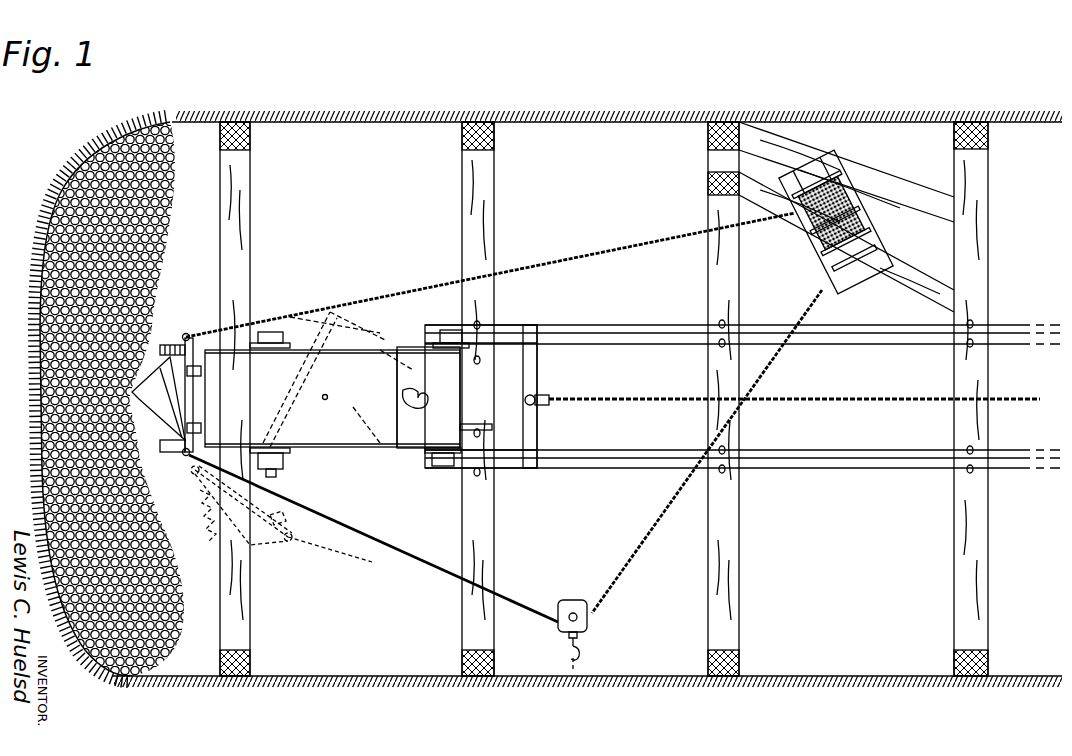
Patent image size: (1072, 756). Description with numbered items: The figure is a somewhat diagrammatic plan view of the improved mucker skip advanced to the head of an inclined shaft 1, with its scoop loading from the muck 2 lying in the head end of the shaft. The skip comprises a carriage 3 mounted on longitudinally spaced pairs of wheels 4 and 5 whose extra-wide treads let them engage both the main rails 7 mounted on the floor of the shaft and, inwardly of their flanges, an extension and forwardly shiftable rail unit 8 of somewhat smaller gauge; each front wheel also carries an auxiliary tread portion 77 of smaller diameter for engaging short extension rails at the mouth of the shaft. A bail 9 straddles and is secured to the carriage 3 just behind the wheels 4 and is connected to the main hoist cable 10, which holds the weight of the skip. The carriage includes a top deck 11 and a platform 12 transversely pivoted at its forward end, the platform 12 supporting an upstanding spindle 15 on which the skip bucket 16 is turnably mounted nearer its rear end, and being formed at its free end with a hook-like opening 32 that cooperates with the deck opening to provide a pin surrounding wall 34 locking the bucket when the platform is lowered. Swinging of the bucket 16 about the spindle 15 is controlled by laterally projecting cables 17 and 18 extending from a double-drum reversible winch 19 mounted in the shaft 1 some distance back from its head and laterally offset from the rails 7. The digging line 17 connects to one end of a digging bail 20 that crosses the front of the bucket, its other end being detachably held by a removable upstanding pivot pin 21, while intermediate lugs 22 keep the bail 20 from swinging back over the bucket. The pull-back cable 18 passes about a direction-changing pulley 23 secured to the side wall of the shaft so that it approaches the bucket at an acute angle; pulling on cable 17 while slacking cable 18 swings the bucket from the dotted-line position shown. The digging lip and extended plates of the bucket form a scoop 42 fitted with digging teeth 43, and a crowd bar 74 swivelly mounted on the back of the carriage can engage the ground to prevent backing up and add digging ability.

The inclined shaft 1 is at (586, 120).
The muck 2 is at (162, 246).
The carriage 3 is at (473, 394).
The wheels 4 is at (283, 330).
The wheels 5 is at (458, 326).
The main rails 7 is at (926, 335).
The forwardly shiftable rail unit 8 is at (628, 346).
The bail 9 is at (541, 346).
The main hoist cable 10 is at (857, 395).
The top deck 11 is at (425, 450).
The platform 12 is at (393, 397).
The spindle 15 is at (322, 398).
The skip bucket 16 is at (405, 355).
The digging line 17 is at (590, 250).
The pull-back cable 18 is at (640, 556).
The double-drum reversible winch 19 is at (806, 236).
The digging bail 20 is at (210, 358).
The pivot pin 21 is at (183, 458).
The lugs 22 is at (202, 428).
The direction-changing pulley 23 is at (568, 605).
The hook-like opening 32 is at (415, 405).
The pin surrounding wall 34 is at (424, 392).
The scoop 42 is at (166, 385).
The digging teeth 43 is at (168, 448).
The crowd bar 74 is at (490, 432).
The auxiliary tread portion 77 is at (285, 470).